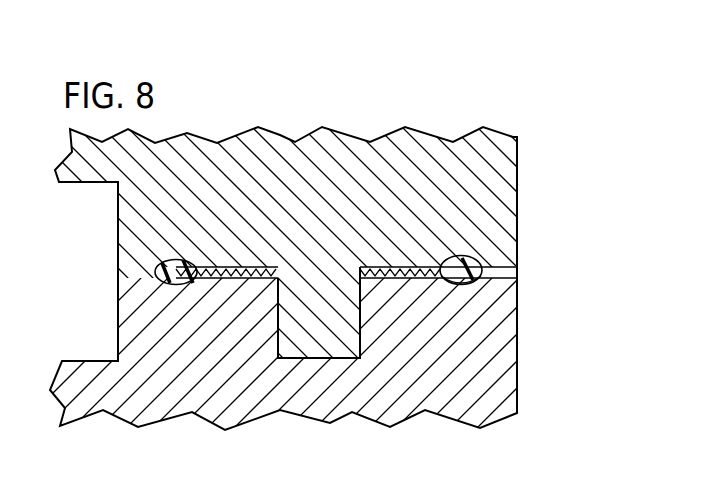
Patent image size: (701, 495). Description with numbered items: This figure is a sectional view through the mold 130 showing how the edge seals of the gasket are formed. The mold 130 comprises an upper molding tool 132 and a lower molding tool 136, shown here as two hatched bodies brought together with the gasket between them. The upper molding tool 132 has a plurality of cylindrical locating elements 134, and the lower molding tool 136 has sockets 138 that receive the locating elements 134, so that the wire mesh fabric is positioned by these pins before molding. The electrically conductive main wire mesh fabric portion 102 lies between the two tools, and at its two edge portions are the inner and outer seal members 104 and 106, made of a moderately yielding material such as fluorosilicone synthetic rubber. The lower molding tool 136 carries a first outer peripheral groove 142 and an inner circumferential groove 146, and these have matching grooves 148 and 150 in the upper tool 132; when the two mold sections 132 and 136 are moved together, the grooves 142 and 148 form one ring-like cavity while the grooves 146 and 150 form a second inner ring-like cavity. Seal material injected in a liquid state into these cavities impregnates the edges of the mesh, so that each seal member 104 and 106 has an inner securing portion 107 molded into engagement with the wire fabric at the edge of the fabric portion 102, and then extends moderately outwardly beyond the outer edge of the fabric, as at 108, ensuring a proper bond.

The main wire mesh fabric portion 102 is at (376, 262).
The inner seal member 104 is at (450, 256).
The outer seal member 106 is at (154, 273).
The inner securing portion 107 is at (447, 258).
The outwardly extending seal portion 108 is at (497, 269).
The mold 130 is at (98, 228).
The upper molding tool 132 is at (507, 167).
The cylindrical locating elements 134 is at (337, 332).
The lower molding tool 136 is at (507, 332).
The sockets 138 is at (280, 325).
The first outer peripheral groove 142 is at (157, 283).
The inner circumferential groove 146 is at (465, 286).
The matching groove 148 is at (157, 263).
The matching groove 150 is at (483, 262).